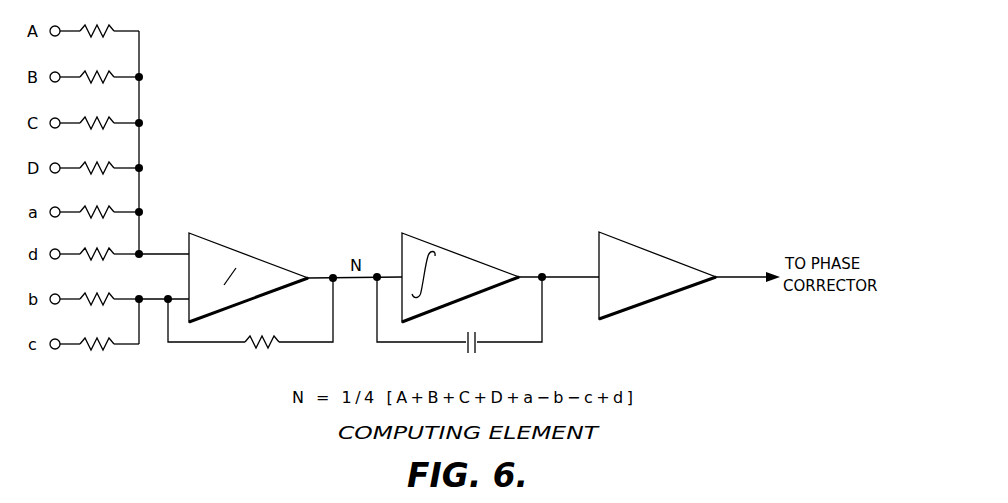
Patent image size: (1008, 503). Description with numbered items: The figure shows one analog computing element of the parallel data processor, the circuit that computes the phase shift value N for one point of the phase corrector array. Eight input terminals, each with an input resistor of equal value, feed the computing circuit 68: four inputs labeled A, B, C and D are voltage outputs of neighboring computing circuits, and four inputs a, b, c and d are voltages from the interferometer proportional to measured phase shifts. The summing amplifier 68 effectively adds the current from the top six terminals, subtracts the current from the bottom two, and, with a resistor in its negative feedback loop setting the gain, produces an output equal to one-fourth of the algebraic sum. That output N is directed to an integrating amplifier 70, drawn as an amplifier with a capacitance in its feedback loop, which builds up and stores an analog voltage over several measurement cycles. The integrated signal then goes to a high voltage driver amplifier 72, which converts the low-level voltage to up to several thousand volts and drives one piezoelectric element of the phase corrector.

The analog computing circuit 68 is at (284, 249).
The integrating amplifier 70 is at (490, 246).
The high voltage driver amplifier 72 is at (675, 243).